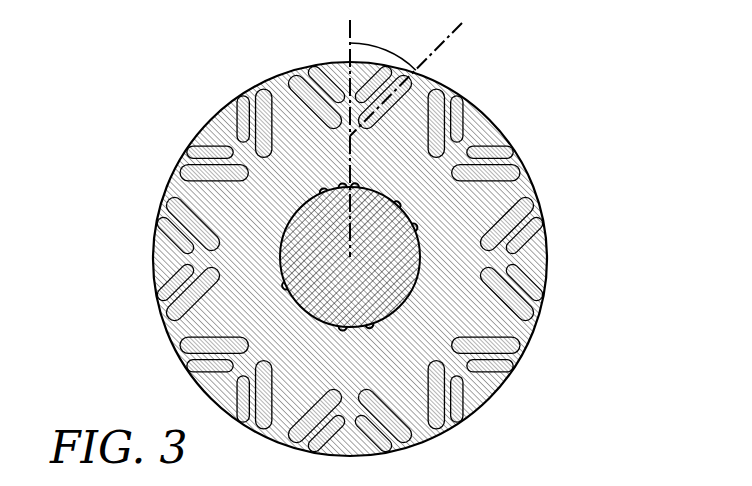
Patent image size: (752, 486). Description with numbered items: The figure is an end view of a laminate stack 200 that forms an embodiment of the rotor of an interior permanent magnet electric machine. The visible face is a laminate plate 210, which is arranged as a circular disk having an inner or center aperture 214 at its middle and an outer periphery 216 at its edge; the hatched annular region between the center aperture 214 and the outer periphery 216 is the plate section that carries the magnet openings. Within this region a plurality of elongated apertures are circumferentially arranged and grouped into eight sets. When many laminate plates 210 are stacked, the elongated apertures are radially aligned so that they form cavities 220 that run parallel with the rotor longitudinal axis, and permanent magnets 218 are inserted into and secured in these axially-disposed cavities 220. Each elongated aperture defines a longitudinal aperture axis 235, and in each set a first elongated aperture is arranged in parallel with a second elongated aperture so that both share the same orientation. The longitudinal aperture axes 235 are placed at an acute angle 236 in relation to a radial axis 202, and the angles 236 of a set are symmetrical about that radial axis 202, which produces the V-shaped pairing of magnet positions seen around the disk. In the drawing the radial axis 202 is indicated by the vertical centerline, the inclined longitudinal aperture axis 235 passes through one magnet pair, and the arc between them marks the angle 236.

The laminate stack 200 is at (360, 228).
The radial axis 202 is at (348, 50).
The laminate plate 210 is at (218, 195).
The center aperture 214 is at (390, 203).
The outer periphery 216 is at (546, 256).
The permanent magnets 218 is at (520, 165).
The cavities 220 is at (536, 234).
The longitudinal aperture axis 235 is at (445, 43).
The angle 236 is at (388, 43).